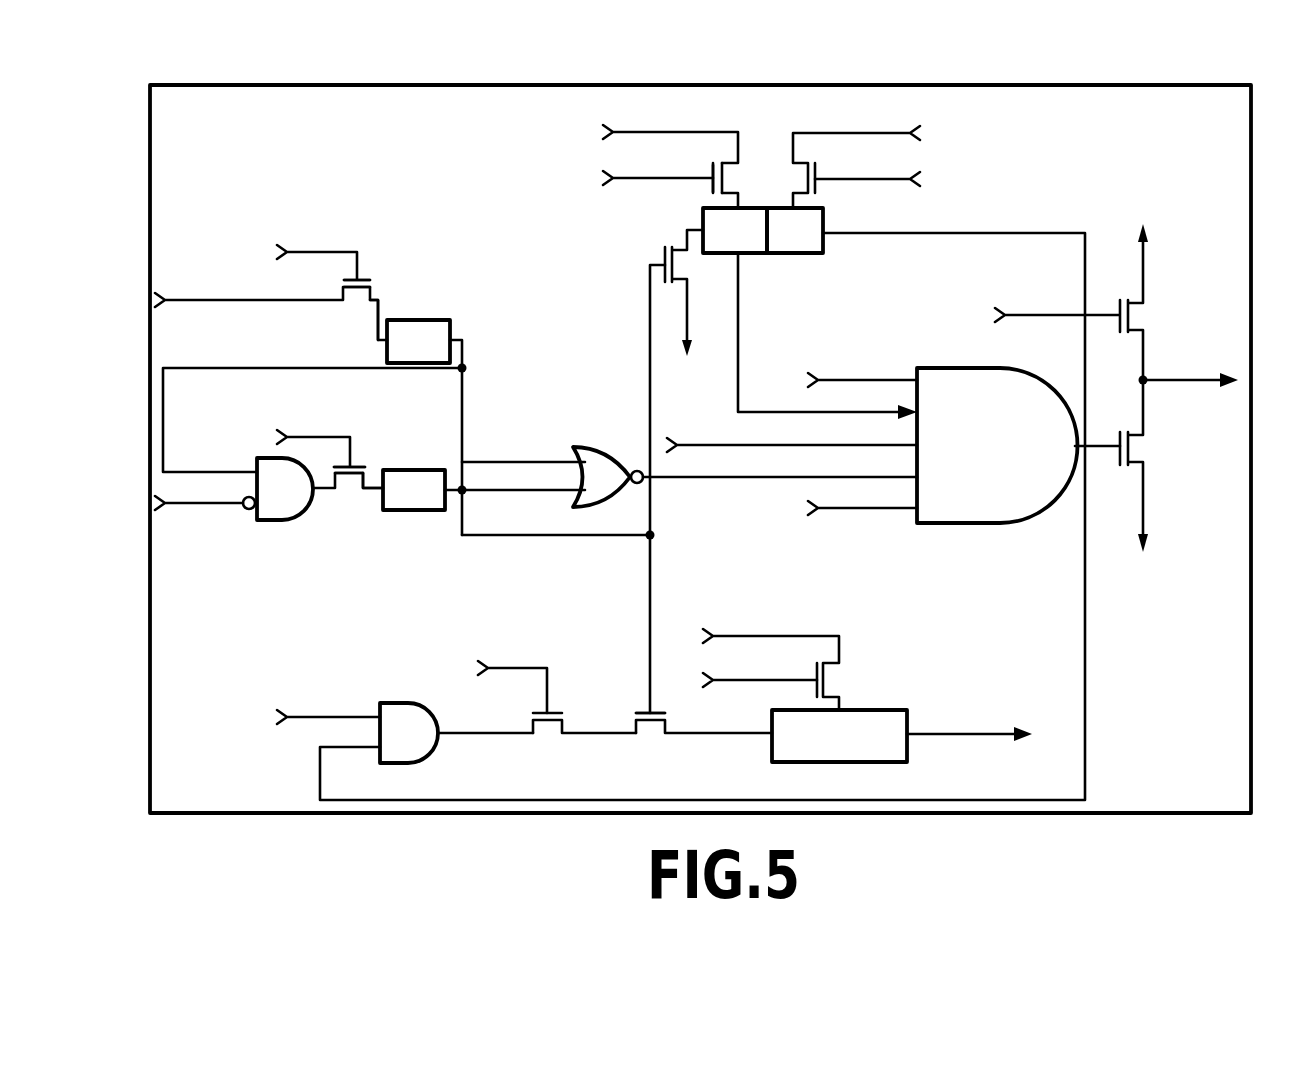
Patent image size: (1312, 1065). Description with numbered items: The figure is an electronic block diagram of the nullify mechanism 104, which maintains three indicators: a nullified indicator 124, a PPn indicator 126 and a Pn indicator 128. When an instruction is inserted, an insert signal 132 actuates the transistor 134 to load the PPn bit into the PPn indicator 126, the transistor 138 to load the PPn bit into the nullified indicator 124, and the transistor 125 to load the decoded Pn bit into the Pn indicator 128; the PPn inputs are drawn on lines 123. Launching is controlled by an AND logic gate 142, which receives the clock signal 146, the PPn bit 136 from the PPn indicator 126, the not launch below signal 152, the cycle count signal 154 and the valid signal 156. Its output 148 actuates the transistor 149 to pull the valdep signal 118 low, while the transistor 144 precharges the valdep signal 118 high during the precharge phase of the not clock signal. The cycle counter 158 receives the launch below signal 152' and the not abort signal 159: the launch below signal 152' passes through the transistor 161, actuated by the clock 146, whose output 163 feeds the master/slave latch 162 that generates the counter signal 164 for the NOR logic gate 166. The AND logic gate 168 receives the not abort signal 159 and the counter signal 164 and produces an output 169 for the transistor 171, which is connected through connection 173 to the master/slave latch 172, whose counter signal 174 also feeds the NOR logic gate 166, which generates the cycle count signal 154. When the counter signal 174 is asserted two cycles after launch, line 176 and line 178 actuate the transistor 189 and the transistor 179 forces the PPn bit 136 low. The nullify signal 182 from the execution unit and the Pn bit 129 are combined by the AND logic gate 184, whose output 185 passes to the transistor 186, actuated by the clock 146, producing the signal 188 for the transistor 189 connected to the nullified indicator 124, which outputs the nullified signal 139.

The nullify mechanism 104 is at (1052, 85).
The valdep signal 118 is at (1180, 385).
The PPn input 123 is at (620, 142).
The nullified indicator 124 is at (912, 134).
The transistor 125 is at (771, 376).
The PPn indicator 126 is at (752, 254).
The Pn indicator 128 is at (802, 248).
The Pn bit 129 is at (1057, 233).
The insert signal 132 is at (620, 192).
The transistor 134 is at (698, 198).
The PPn bit 136 is at (738, 312).
The transistor 138 is at (845, 675).
The nullified signal 139 is at (970, 738).
The AND logic gate 142 is at (968, 445).
The transistor 144 is at (1150, 320).
The clock signal 146 is at (360, 262).
The AND logic gate output 148 is at (1100, 452).
The transistor 149 is at (1150, 452).
The not launch below signal 152 is at (787, 418).
The launch below signal 152' is at (271, 307).
The cycle count signal 154 is at (748, 480).
The valid signal 156 is at (872, 511).
The cycle counter 158 is at (536, 460).
The not abort signal 159 is at (195, 508).
The transistor 161 is at (345, 320).
The master/slave latch 162 is at (440, 320).
The output 163 is at (377, 322).
The counter signal 164 is at (466, 360).
The NOR logic gate 166 is at (592, 447).
The AND logic gate 168 is at (262, 523).
The output 169 is at (328, 492).
The transistor 171 is at (348, 505).
The master/slave latch 172 is at (440, 513).
The connection 173 is at (370, 498).
The counter signal 174 is at (458, 470).
The line 176 is at (552, 537).
The line 178 is at (650, 364).
The transistor 179 is at (692, 280).
The nullify signal 182 is at (302, 722).
The AND logic gate 184 is at (395, 765).
The output 185 is at (485, 736).
The transistor 186 is at (552, 740).
The signal 188 is at (598, 708).
The transistor 189 is at (660, 740).